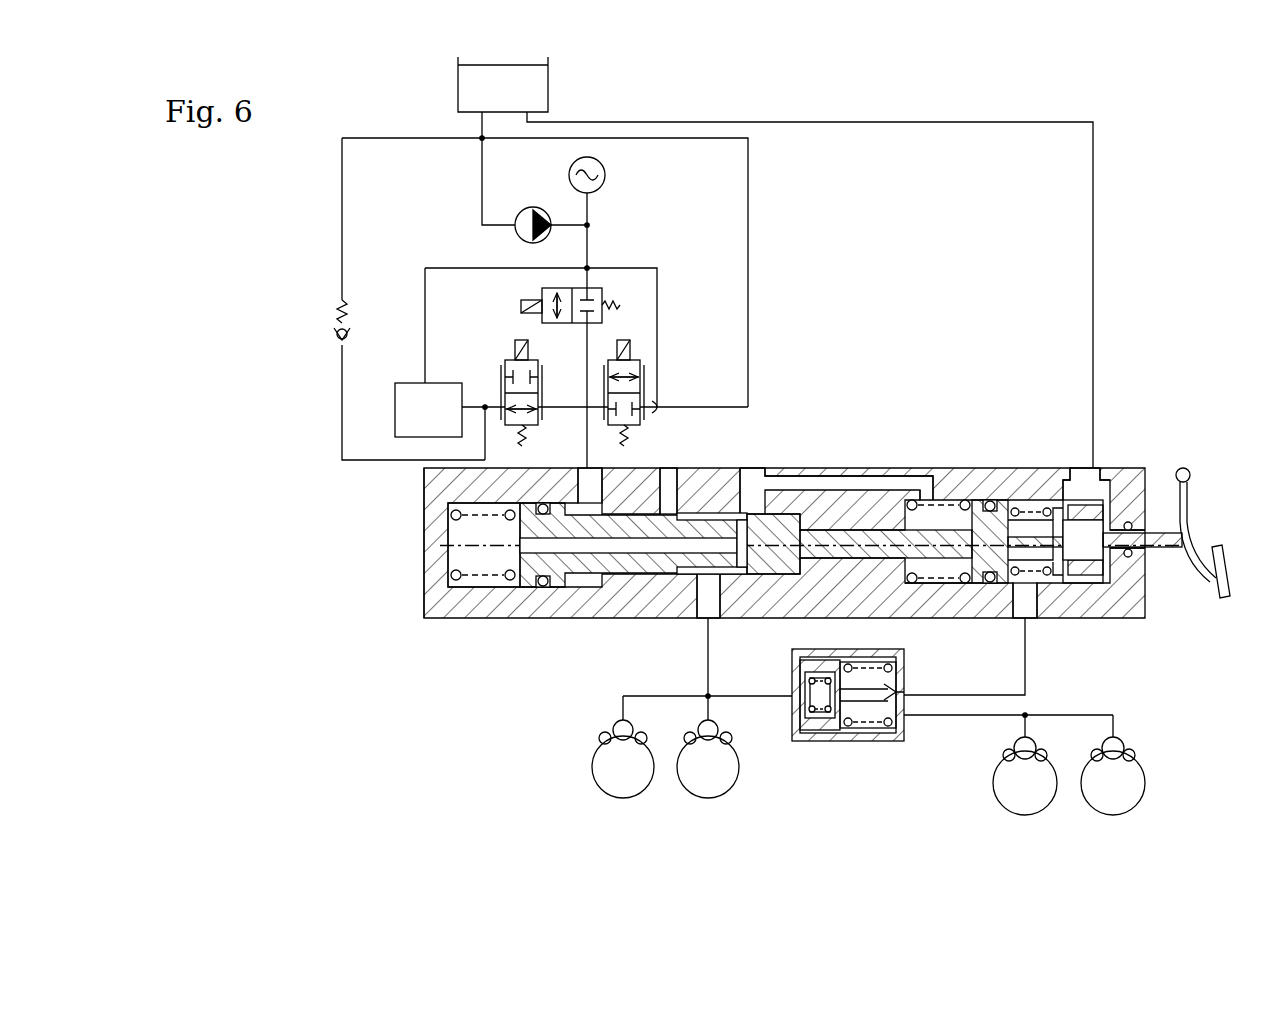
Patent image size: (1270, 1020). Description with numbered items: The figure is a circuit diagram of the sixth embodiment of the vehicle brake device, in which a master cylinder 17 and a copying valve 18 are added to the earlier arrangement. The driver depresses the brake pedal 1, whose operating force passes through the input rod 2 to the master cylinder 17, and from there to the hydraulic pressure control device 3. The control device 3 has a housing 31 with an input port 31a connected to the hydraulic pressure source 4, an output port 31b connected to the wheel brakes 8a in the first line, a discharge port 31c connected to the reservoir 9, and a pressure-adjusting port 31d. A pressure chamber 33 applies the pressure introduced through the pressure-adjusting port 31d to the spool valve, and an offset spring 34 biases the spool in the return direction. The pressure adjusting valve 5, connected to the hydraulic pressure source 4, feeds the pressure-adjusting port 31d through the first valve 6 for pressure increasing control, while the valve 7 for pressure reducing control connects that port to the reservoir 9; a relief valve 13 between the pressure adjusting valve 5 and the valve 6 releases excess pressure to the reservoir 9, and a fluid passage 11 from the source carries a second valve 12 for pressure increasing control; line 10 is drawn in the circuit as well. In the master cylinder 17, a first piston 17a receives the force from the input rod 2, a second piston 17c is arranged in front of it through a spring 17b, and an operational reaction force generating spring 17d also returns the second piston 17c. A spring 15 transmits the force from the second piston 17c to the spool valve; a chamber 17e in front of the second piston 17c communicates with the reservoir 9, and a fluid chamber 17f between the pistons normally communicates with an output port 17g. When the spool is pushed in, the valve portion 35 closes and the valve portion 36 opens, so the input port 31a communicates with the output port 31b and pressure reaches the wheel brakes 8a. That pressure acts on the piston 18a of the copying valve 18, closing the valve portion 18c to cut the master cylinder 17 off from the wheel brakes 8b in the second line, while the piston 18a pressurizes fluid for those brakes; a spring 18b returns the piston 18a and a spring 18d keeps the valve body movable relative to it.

The brake pedal 1 is at (1226, 575).
The input rod 2 is at (1160, 546).
The hydraulic pressure control device 3 is at (497, 622).
The hydraulic pressure source 4 is at (600, 212).
The pressure adjusting valve 5 is at (395, 407).
The first valve for pressure increasing control 6 is at (505, 360).
The valve for pressure reducing control 7 is at (637, 360).
The wheel brakes in the first line 8a is at (690, 785).
The wheel brakes in the second line 8b is at (1098, 802).
The reservoir 9 is at (548, 97).
The hydraulic passage 10 is at (560, 410).
The fluid passage 11 is at (587, 358).
The second valve for pressure increasing control 12 is at (540, 300).
The relief valve 13 is at (338, 330).
The spring for transmitting the operating force 15 is at (881, 522).
The master cylinder 17 is at (978, 466).
The first piston 17a is at (1112, 590).
The spring 17b is at (1070, 590).
The second piston 17c is at (980, 585).
The operational reaction force generating spring 17d is at (908, 585).
The chamber 17e is at (945, 518).
The fluid chamber 17f is at (1020, 518).
The output port 17g is at (1030, 620).
The copying valve 18 is at (850, 745).
The piston 18a is at (806, 742).
The spring 18b is at (893, 742).
The valve portion 18c is at (905, 690).
The spring 18d is at (800, 680).
The housing 31 is at (424, 519).
The input port 31a is at (657, 479).
The output port 31b is at (692, 618).
The discharge port 31c is at (744, 490).
The pressure-adjusting port 31d is at (587, 481).
The pressure chamber 33 is at (576, 506).
The offset spring 34 is at (455, 580).
The valve portion 35 is at (737, 513).
The valve portion 36 is at (672, 530).